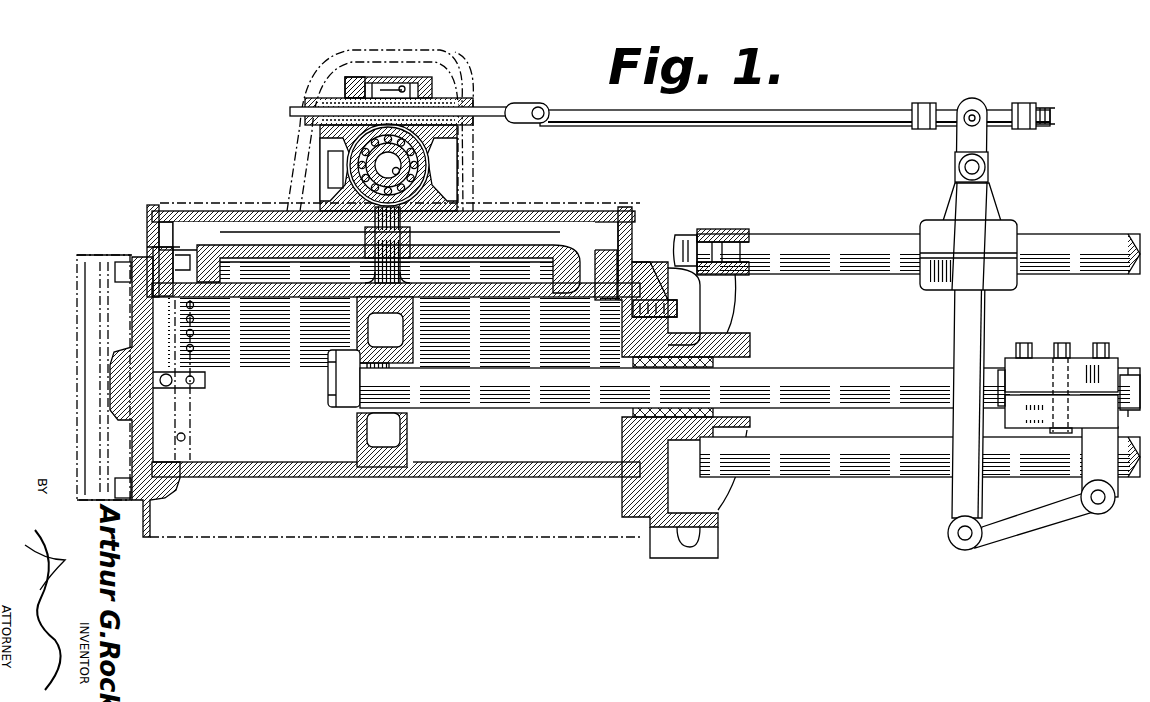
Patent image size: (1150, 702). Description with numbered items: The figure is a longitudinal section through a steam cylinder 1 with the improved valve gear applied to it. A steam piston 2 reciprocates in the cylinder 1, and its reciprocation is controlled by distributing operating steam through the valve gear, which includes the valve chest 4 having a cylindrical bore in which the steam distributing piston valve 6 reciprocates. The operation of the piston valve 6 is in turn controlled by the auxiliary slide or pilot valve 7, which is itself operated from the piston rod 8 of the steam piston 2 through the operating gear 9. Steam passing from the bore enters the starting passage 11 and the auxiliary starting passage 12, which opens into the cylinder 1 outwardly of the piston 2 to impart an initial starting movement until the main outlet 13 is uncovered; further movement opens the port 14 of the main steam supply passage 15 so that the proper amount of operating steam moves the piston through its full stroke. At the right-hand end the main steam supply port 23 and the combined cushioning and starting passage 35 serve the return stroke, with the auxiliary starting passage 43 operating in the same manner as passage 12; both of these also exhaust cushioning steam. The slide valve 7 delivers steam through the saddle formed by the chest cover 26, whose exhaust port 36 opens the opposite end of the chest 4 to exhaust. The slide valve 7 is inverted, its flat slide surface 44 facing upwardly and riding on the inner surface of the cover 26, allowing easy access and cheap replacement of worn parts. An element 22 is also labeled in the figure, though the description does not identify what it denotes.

The steam cylinder 1 is at (497, 466).
The steam piston 2 is at (417, 443).
The valve chest 4 is at (420, 186).
The piston valve 6 is at (420, 166).
The auxiliary slide valve 7 is at (425, 84).
The piston rod 8 is at (833, 382).
The operating gear 9 is at (965, 137).
The starting passage 11 is at (265, 245).
The auxiliary starting passage 12 is at (152, 264).
The main outlet 13 is at (130, 315).
The port 14 is at (197, 390).
The main steam supply passage 15 is at (237, 240).
The eccentric 22 is at (412, 178).
The main steam supply port 23 is at (525, 233).
The chest cover 26 is at (402, 84).
The combined cushioning and starting passage 35 is at (641, 212).
The exhaust port 36 is at (389, 76).
The auxiliary starting passage 43 is at (640, 278).
The flat slide surface 44 is at (364, 78).